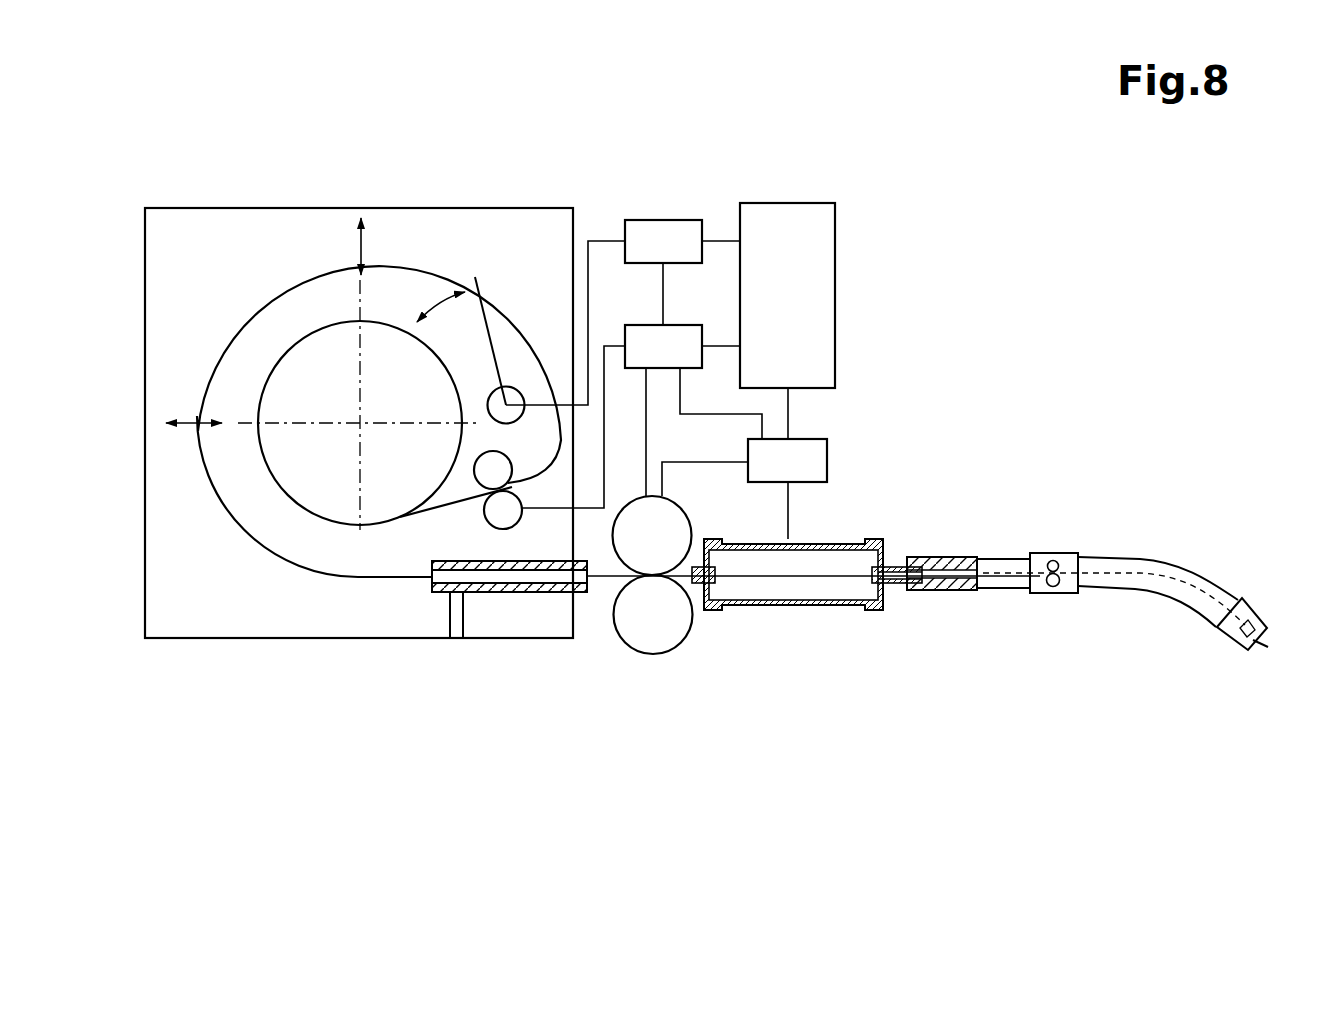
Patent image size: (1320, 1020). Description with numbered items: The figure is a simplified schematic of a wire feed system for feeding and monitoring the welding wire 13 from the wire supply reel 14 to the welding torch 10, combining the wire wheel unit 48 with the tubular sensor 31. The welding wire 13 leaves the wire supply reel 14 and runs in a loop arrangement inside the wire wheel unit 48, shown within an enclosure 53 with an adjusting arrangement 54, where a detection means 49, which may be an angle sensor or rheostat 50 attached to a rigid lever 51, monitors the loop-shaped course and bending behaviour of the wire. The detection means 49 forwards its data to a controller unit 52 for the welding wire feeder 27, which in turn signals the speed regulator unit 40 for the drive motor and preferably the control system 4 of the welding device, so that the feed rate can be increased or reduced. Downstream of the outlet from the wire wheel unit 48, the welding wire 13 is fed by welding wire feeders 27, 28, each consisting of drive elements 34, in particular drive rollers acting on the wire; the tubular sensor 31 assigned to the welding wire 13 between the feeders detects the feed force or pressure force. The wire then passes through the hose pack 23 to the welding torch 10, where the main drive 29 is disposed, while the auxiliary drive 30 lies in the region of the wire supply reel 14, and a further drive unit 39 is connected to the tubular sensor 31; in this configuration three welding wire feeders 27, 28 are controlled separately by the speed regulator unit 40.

The control system 4 is at (800, 210).
The welding torch 10 is at (1163, 552).
The welding wire 13 is at (357, 578).
The wire supply reel 14 is at (317, 472).
The hose pack 23 is at (960, 552).
The welding wire feeder 27 is at (628, 463).
The welding wire feeder 28 is at (1052, 608).
The main drive 29 is at (1063, 585).
The auxiliary drive 30 is at (625, 665).
The tubular sensor 31 is at (838, 527).
The drive elements 34 is at (497, 468).
The control device 39 is at (808, 460).
The speed regulator unit 40 is at (683, 335).
The wire wheel unit 48 is at (485, 187).
The detection means 49 is at (492, 303).
The angle sensor or rheostat 50 is at (509, 395).
The rigid lever 51 is at (493, 345).
The controller unit 52 is at (683, 233).
The housing 53 is at (188, 230).
The adjusting device 54 is at (438, 300).